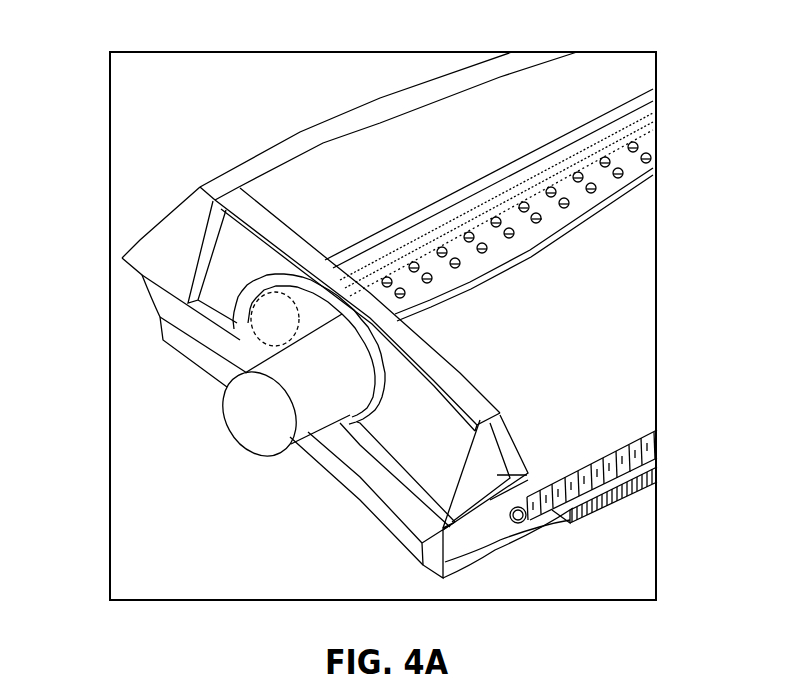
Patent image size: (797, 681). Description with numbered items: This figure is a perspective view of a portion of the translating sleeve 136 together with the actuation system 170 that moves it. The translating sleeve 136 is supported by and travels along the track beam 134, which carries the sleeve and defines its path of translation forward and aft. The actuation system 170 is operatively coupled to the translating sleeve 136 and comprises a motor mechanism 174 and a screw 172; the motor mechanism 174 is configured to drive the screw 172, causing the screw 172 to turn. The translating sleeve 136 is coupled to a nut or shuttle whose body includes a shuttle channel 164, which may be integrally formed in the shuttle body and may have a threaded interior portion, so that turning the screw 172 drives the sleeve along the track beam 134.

The track beam 134 is at (375, 133).
The translating sleeve 136 is at (605, 388).
The shuttle channel 164 is at (535, 256).
The actuation system 170 is at (232, 517).
The screw 172 is at (263, 328).
The motor mechanism 174 is at (245, 425).